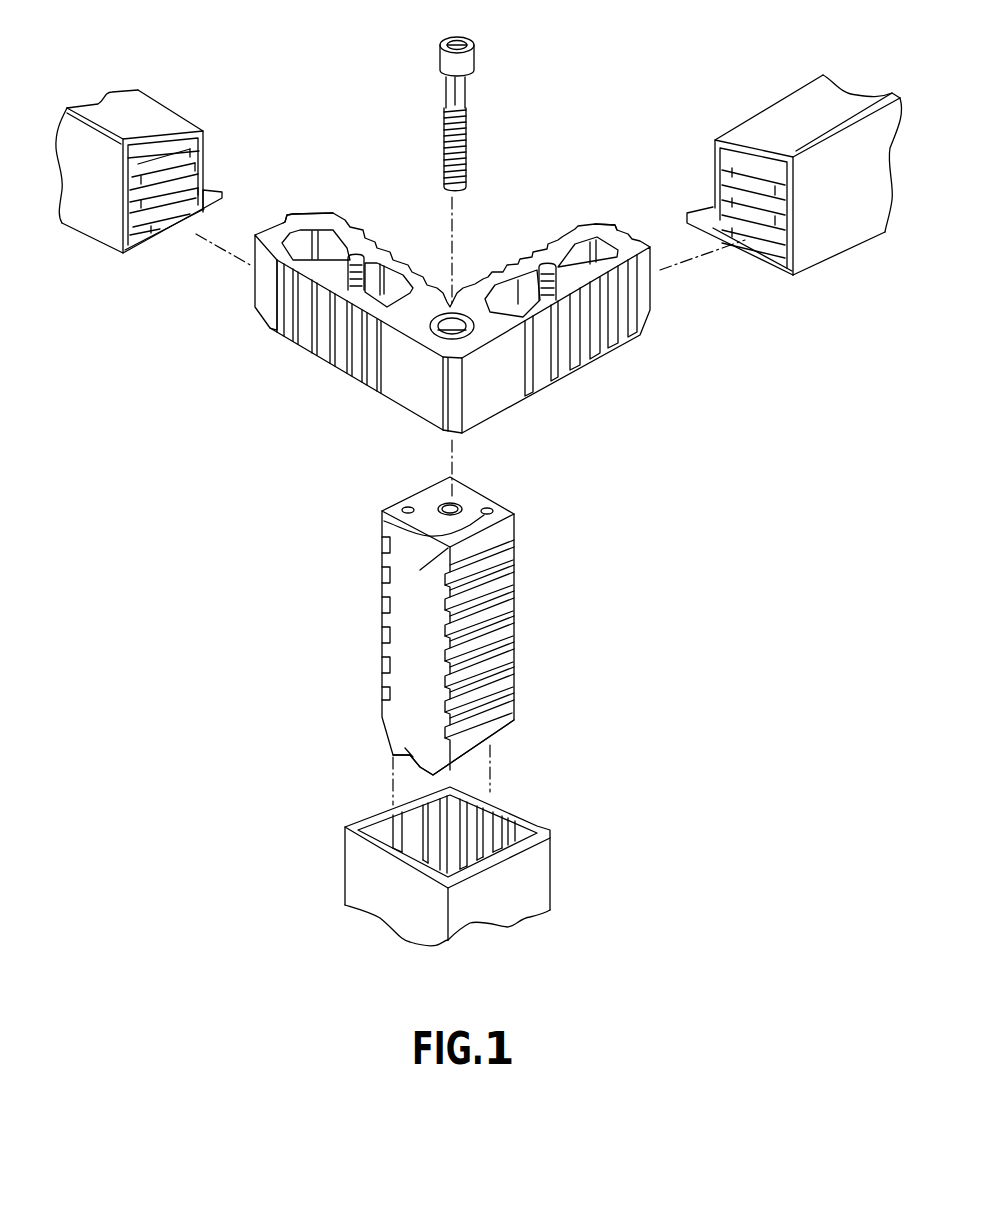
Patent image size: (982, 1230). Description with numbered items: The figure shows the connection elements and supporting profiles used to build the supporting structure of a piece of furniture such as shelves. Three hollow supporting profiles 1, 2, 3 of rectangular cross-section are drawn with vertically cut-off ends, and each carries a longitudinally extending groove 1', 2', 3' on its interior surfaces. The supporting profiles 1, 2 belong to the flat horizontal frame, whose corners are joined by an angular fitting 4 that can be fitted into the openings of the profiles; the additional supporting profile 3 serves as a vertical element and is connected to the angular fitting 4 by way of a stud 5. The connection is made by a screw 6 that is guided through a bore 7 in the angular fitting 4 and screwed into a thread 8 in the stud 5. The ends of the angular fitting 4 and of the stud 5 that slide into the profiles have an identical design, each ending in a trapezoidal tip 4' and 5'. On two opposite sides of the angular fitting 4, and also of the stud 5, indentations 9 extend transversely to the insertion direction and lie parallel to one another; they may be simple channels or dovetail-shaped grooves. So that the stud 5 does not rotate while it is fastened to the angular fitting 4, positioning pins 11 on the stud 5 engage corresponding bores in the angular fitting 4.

The supporting profile 1 is at (135, 195).
The groove 1' is at (163, 231).
The supporting profile 2 is at (794, 194).
The groove 2' is at (753, 243).
The supporting profile 3 is at (426, 866).
The groove 3' is at (420, 823).
The angular fitting 4 is at (452, 326).
The trapezoidal tip 4' is at (457, 193).
The stud 5 is at (471, 626).
The trapezoidal tip 5' is at (474, 752).
The screw 6 is at (468, 92).
The bore 7 is at (465, 300).
The thread 8 is at (453, 505).
The indentations 9 is at (343, 352).
The pins 11 is at (384, 519).